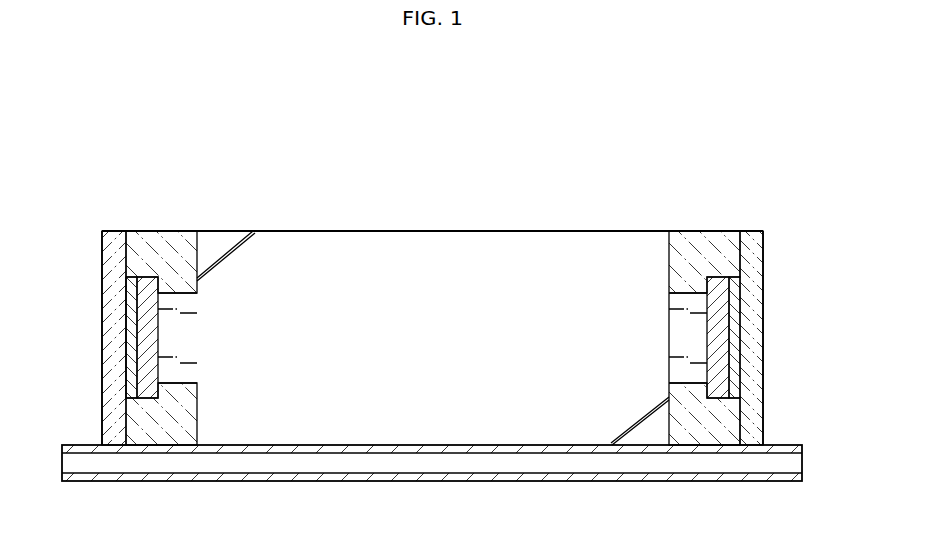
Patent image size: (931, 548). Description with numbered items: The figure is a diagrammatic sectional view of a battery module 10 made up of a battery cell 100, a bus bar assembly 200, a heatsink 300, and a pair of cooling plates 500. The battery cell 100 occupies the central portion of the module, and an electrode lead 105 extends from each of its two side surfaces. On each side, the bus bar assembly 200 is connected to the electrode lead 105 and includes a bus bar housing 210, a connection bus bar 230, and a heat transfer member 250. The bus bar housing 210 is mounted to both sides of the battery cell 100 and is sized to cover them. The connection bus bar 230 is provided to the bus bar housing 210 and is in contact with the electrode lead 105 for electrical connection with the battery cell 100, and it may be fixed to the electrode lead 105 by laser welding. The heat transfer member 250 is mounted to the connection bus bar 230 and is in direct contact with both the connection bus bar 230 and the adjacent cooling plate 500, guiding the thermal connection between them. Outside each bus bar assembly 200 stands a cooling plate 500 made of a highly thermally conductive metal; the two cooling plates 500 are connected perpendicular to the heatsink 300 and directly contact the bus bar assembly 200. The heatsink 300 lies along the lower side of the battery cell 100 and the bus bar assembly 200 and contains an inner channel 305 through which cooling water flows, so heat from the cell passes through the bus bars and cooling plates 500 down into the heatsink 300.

The battery module 10 is at (120, 136).
The battery cell 100 is at (529, 247).
The electrode lead 105 is at (183, 298).
The bus bar assembly 200 is at (168, 222).
The bus bar housing 210 is at (710, 248).
The connection bus bar 230 is at (718, 345).
The heat transfer member 250 is at (733, 315).
The heatsink 300 is at (398, 483).
The inner channel 305 is at (480, 462).
The cooling plate 500 is at (102, 258).